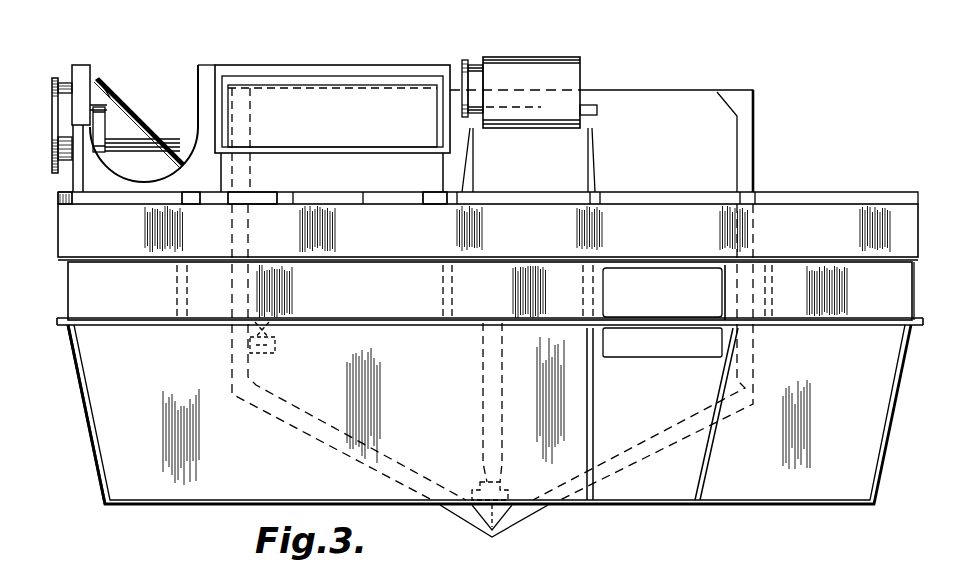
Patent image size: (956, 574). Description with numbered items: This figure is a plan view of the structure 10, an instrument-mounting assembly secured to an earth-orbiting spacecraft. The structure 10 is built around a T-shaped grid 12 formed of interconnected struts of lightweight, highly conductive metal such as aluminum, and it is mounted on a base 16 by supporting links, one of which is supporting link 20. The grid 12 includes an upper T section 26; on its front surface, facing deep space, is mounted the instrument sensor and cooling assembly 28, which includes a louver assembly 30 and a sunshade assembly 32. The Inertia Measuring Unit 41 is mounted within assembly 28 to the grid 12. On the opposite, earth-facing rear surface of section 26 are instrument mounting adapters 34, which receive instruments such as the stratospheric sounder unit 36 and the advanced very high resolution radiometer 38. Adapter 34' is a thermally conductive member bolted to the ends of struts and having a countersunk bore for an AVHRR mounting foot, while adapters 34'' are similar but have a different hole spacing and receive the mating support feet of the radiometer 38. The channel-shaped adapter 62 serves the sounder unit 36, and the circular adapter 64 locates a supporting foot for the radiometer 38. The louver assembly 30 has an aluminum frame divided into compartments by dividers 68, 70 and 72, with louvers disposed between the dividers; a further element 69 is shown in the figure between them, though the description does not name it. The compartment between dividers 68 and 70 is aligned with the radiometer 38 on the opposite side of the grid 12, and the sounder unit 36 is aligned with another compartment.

The structure 10 is at (793, 127).
The T-shaped grid 12 is at (931, 217).
The base 16 is at (523, 512).
The supporting link 20 is at (480, 388).
The upper T section 26 is at (488, 254).
The instrument sensor and cooling assembly 28 is at (898, 418).
The louver assembly 30 is at (67, 297).
The sunshade assembly 32 is at (98, 450).
The instrument mounting adapters 34 is at (479, 220).
The adapter 34' is at (42, 177).
The adapters 34'' is at (337, 184).
The stratospheric sounder unit 36 is at (528, 76).
The advanced very high resolution radiometer 38 is at (56, 78).
The Inertia Measuring Unit 41 is at (658, 343).
The adapter 62 is at (510, 192).
The circular adapter 64 is at (188, 204).
The divider 68 is at (176, 281).
The fastener 69 is at (441, 287).
The divider 70 is at (590, 308).
The divider 72 is at (773, 302).